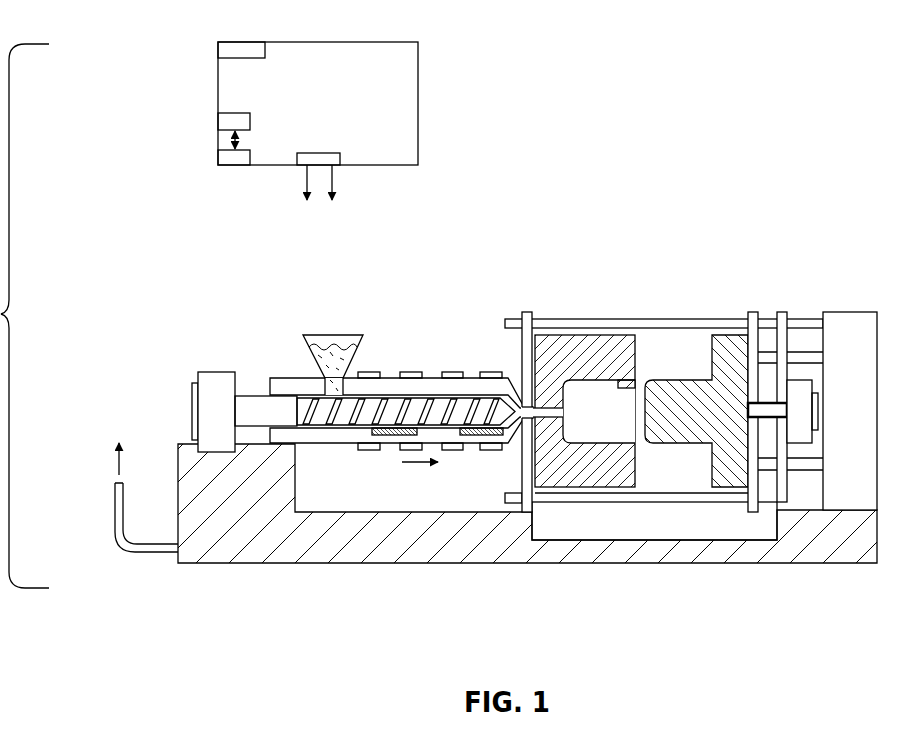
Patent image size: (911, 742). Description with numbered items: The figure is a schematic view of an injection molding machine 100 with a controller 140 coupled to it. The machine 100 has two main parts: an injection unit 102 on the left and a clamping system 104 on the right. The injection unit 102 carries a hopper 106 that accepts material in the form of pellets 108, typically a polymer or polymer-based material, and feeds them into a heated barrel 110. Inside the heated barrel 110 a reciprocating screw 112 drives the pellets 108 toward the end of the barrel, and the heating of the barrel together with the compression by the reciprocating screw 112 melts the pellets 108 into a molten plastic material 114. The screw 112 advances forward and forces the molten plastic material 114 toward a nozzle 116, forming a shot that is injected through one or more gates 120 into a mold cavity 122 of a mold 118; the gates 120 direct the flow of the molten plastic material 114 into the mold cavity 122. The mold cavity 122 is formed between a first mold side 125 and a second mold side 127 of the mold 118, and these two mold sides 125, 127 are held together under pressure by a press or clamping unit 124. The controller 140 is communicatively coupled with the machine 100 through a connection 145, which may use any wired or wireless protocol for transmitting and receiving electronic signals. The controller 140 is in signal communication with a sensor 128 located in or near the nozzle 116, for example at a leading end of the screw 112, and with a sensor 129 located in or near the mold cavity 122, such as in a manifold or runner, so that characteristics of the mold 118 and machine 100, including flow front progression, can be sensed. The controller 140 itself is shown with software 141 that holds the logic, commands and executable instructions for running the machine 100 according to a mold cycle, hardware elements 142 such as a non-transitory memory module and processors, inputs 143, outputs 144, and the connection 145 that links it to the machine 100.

The injection molding machine 100 is at (569, 118).
The injection unit 102 is at (375, 480).
The clamping system 104 is at (653, 567).
The hopper 106 is at (343, 333).
The pellets 108 is at (313, 348).
The heated barrel 110 is at (392, 371).
The reciprocating screw 112 is at (338, 426).
The molten plastic material 114 is at (433, 395).
The nozzle 116 is at (541, 334).
The mold 118 is at (637, 327).
The gates 120 is at (566, 385).
The mold cavity 122 is at (603, 388).
The clamping unit 124 is at (827, 299).
The first mold side 125 is at (583, 477).
The second mold side 127 is at (698, 426).
The sensor 128 is at (522, 403).
The sensor 129 is at (636, 378).
The controller 140 is at (377, 42).
The software 141 is at (218, 120).
The hardware elements 142 is at (218, 157).
The inputs 143 is at (218, 50).
The outputs 144 is at (347, 167).
The connection 145 is at (302, 182).